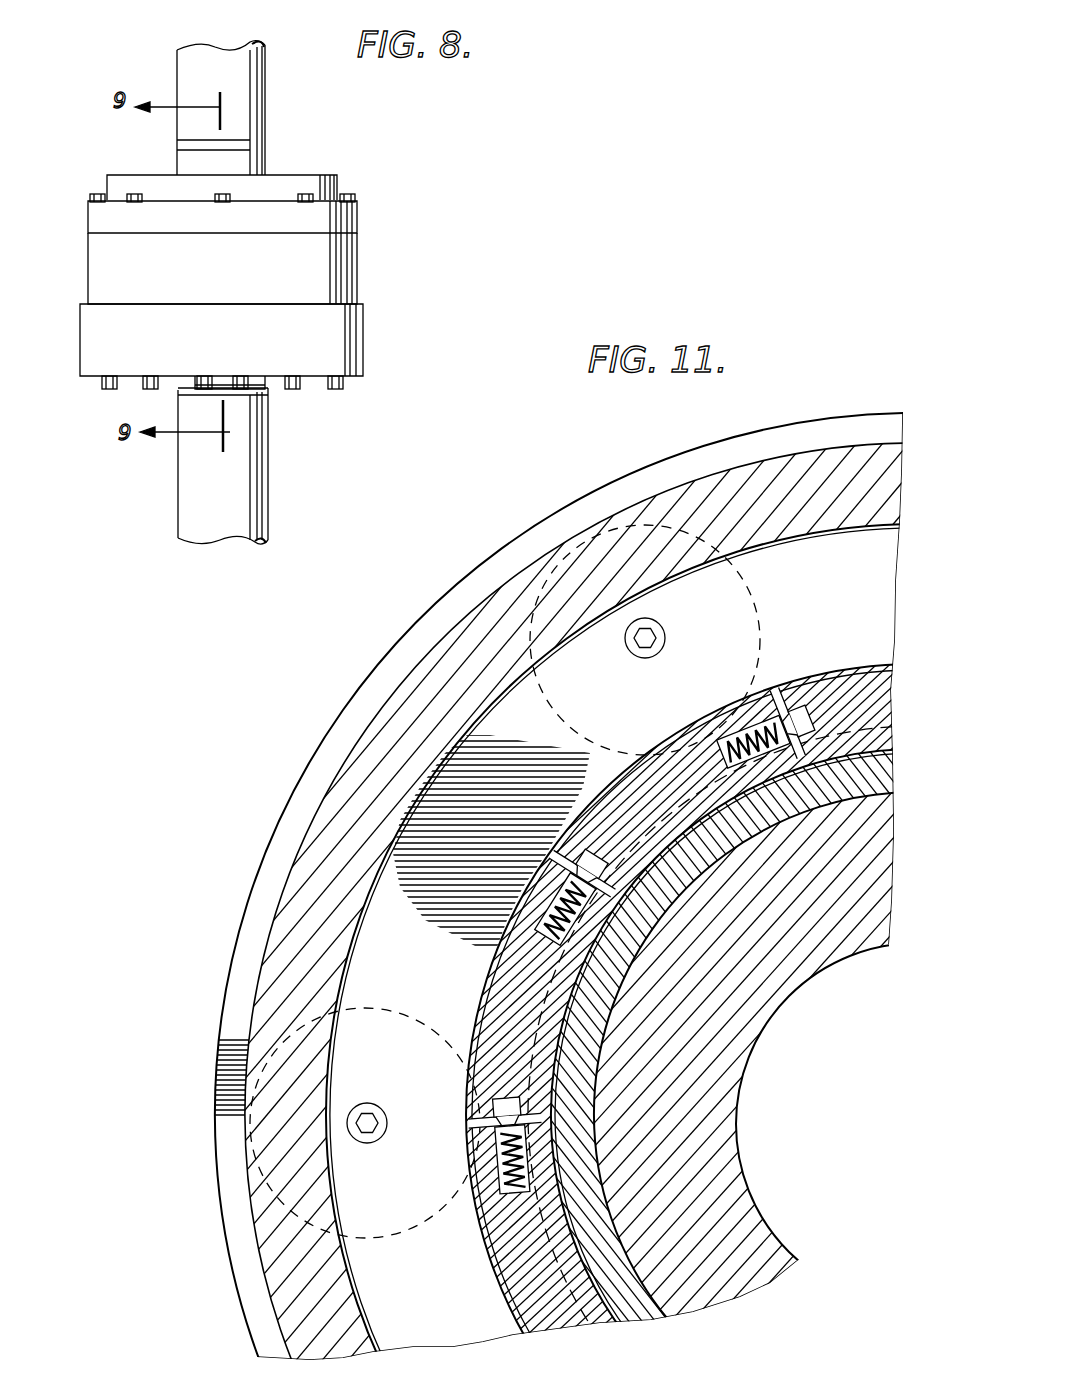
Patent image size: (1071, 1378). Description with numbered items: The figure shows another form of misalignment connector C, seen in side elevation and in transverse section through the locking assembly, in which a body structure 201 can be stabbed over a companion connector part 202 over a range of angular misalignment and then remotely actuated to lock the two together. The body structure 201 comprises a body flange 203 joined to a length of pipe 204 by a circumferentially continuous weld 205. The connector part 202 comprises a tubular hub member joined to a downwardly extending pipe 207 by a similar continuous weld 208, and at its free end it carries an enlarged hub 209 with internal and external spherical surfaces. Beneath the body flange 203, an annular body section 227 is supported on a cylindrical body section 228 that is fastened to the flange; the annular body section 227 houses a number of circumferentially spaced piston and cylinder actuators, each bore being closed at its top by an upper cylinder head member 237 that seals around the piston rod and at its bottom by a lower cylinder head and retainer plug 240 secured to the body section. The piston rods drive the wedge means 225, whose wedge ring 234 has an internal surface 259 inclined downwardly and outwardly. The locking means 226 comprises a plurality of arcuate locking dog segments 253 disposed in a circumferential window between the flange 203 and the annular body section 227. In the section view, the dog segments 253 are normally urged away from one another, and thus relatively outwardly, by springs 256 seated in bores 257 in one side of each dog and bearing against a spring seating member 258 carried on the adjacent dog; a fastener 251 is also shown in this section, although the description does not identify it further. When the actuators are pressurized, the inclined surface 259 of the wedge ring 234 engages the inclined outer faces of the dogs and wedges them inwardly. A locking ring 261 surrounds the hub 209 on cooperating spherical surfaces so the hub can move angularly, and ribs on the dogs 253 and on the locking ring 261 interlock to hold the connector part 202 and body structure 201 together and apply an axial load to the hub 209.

In FIG. 8, the body structure 201 is at (358, 252).
In FIG. 8, the connector part 202 is at (265, 386).
In FIG. 8, the body flange 203 is at (100, 218).
In FIG. 8, the pipe 204 is at (243, 70).
In FIG. 8, the weld 205 is at (180, 145).
In FIG. 8, the pipe 207 is at (243, 478).
In FIG. 8, the weld 208 is at (180, 390).
In FIG. 11, the hub 209 is at (745, 1012).
In FIG. 11, the wedge means 225 is at (350, 1207).
In FIG. 11, the locking means 226 is at (655, 745).
In FIG. 8, the annular body section 227 is at (100, 322).
In FIG. 11, the annular body section 227 is at (245, 945).
In FIG. 8, the cylindrical body section 228 is at (102, 260).
In FIG. 11, the cylindrical body section 228 is at (363, 737).
In FIG. 11, the wedge ring 234 is at (435, 928).
In FIG. 11, the upper cylinder head member 237 is at (760, 593).
In FIG. 8, the lower cylinder head and retainer plug 240 is at (130, 385).
In FIG. 11, the cap screw 251 is at (663, 632).
In FIG. 11, the locking dog segments 253 is at (737, 817).
In FIG. 11, the springs 256 is at (575, 912).
In FIG. 11, the bores 257 is at (570, 930).
In FIG. 11, the spring seating member 258 is at (600, 868).
In FIG. 11, the internal surface 259 is at (500, 990).
In FIG. 11, the locking ring 261 is at (600, 1038).
In FIG. 8, the connector C is at (372, 178).